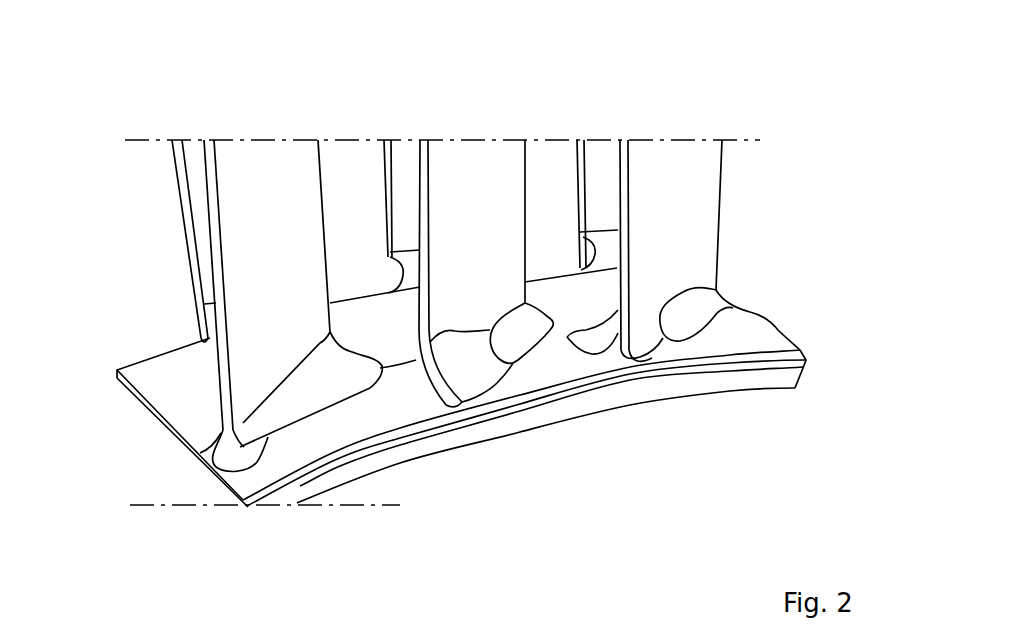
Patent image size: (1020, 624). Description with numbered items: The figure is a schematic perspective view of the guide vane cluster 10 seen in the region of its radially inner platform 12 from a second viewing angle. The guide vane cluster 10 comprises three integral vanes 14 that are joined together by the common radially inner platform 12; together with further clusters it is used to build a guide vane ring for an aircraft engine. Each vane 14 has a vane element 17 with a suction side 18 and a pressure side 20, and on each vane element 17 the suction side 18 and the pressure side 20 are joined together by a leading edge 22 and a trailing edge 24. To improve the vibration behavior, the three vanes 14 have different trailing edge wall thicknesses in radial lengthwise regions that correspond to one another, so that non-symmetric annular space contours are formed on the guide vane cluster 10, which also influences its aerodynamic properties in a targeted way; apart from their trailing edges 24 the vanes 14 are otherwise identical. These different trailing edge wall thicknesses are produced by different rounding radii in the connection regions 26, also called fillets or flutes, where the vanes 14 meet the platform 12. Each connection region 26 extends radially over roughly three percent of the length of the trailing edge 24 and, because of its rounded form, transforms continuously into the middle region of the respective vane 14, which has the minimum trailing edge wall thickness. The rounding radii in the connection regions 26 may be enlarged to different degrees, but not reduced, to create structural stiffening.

The guide vane cluster 10 is at (126, 91).
The radially inner platform 12 is at (762, 332).
The vane 14 is at (255, 89).
The vane element 17 is at (308, 172).
The suction side 18 is at (306, 268).
The pressure side 20 is at (168, 267).
The leading edge 22 is at (190, 222).
The trailing edge 24 is at (200, 327).
The connection region 26 is at (270, 443).